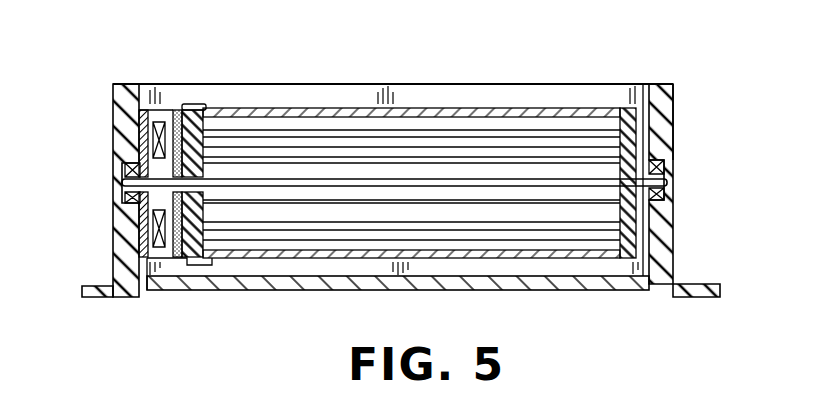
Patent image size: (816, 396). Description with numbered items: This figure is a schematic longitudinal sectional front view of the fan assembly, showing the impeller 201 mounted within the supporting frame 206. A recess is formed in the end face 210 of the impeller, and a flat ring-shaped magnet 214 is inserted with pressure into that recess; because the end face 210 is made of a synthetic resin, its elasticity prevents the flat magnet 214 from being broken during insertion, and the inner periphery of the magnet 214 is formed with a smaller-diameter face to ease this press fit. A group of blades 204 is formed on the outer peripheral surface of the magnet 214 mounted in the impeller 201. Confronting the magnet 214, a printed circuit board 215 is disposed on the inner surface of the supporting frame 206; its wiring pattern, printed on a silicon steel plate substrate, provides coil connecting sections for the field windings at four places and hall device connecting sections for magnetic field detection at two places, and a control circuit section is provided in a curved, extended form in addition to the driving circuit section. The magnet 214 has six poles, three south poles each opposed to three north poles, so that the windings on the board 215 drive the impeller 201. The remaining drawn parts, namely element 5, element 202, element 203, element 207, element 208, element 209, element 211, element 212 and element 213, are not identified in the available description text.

The base plate 5 is at (496, 290).
The impeller 201 is at (509, 104).
The core 202 is at (402, 172).
The intermediate layer 203 is at (573, 132).
The blades 204 is at (297, 125).
The supporting frame 206 is at (118, 115).
The housing side wall 207 is at (668, 128).
The resin layer 208 is at (177, 108).
The cover 209 is at (670, 98).
The end face of the impeller 210 is at (207, 105).
The end plate 211 is at (627, 105).
The housing flange 212 is at (117, 210).
The seal ring 213 is at (665, 167).
The magnet 214 is at (173, 110).
The printed circuit board 215 is at (141, 152).